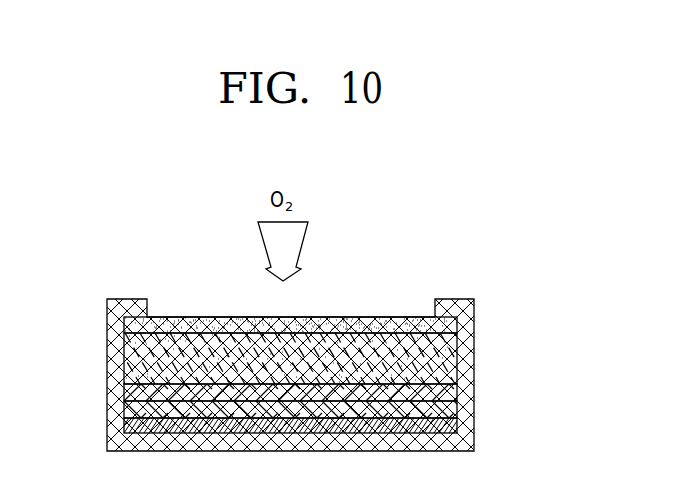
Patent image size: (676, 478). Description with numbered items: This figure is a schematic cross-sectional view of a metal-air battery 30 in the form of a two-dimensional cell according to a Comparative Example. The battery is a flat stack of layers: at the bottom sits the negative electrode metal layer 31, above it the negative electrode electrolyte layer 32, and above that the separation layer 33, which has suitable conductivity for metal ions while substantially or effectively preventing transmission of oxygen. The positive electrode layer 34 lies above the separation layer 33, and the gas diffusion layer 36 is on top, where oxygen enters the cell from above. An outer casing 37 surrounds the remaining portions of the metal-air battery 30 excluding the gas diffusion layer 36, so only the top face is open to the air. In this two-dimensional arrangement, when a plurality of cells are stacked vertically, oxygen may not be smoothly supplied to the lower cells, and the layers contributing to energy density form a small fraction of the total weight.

The metal-air battery 30 is at (482, 252).
The negative electrode metal layer 31 is at (452, 429).
The negative electrode electrolyte layer 32 is at (452, 409).
The separation layer 33 is at (452, 390).
The positive electrode layer 34 is at (452, 358).
The gas diffusion layer 36 is at (452, 323).
The outer casing 37 is at (475, 306).